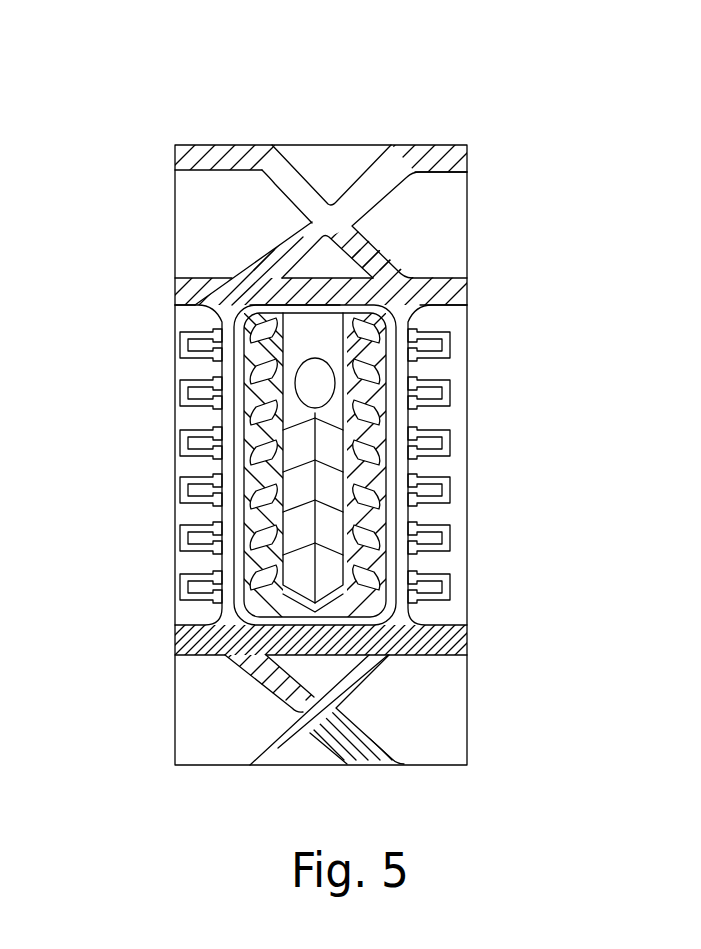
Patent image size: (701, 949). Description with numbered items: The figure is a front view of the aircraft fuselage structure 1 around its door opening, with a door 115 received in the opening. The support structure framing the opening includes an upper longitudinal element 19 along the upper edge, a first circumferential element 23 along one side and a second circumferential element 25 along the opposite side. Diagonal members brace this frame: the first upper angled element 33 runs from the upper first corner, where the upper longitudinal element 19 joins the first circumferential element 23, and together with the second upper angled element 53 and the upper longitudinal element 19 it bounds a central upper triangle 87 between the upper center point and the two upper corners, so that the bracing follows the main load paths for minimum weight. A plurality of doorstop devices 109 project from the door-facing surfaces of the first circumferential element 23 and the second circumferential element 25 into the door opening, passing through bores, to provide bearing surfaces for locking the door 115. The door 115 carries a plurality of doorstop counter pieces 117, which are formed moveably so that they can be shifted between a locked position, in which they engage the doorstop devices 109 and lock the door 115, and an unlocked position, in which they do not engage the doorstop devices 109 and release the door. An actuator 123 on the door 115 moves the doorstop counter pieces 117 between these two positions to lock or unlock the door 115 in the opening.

The aircraft fuselage structure 1 is at (513, 95).
The upper longitudinal element 19 is at (300, 293).
The central upper triangle 87 is at (331, 265).
The first upper angled element 33 is at (280, 249).
The second upper angled element 53 is at (372, 257).
The door 115 is at (400, 324).
The second circumferential element 25 is at (410, 362).
The first circumferential element 23 is at (222, 460).
The doorstop devices 109 is at (175, 412).
The doorstop counter pieces 117 is at (222, 543).
The actuator 123 is at (270, 650).